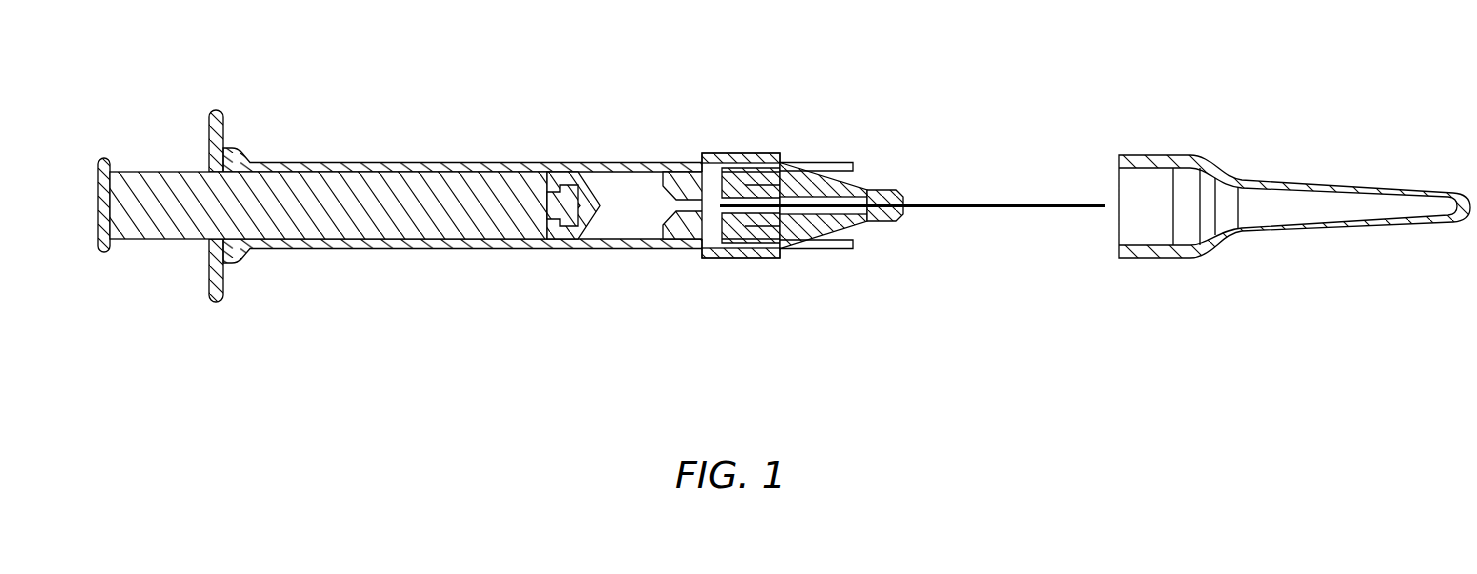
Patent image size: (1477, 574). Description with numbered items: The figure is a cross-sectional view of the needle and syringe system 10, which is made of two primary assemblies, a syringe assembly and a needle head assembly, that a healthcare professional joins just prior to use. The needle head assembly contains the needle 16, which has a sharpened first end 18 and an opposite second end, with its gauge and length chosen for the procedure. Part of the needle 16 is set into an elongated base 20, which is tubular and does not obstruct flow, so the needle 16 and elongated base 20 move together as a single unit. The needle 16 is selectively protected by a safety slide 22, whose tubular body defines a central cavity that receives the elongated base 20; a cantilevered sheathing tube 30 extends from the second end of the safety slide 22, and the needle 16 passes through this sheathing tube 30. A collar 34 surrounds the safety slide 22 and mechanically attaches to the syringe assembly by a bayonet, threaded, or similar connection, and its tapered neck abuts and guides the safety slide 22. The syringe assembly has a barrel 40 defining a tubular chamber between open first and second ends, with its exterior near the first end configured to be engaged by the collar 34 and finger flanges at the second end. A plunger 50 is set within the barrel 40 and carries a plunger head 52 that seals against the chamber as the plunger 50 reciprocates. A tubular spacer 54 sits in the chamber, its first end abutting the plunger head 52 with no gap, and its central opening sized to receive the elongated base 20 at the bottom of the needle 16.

The needle and syringe system 10 is at (832, 86).
The needle 16 is at (830, 190).
The sharpened first end 18 is at (1105, 203).
The elongated base 20 is at (758, 203).
The safety slide 22 is at (857, 240).
The sheathing tube 30 is at (957, 208).
The collar 34 is at (757, 258).
The barrel 40 is at (565, 234).
The plunger 50 is at (196, 178).
The plunger head 52 is at (568, 172).
The tubular spacer 54 is at (673, 234).